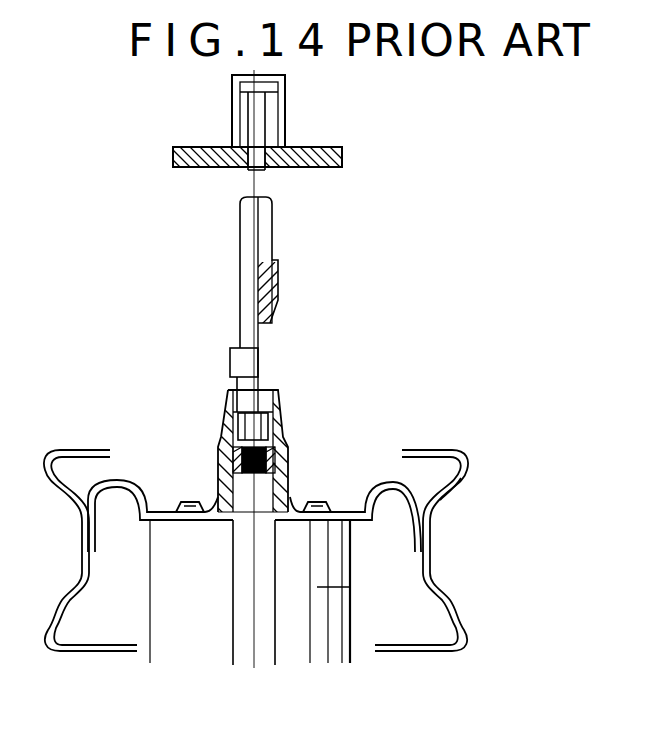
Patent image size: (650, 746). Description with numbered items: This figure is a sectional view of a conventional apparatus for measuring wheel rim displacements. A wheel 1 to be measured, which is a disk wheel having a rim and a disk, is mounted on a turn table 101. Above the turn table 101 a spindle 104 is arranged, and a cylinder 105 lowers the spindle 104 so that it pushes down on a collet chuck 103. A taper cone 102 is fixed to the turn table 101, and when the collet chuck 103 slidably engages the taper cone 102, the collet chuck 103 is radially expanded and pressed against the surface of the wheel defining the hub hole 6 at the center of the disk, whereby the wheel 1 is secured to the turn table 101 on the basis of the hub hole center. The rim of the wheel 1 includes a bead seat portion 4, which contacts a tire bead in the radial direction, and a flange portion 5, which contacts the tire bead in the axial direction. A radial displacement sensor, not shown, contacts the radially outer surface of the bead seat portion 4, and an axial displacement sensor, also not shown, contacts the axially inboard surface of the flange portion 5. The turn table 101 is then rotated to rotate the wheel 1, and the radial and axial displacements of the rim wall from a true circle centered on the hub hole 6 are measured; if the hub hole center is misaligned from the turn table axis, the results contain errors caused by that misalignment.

The cylinder 105 is at (283, 127).
The spindle 104 is at (278, 279).
The collet chuck 103 is at (283, 438).
The taper cone 102 is at (267, 487).
The wheel 1 is at (358, 512).
The hub hole 6 is at (290, 492).
The flange portion 5 is at (447, 497).
The bead seat portion 4 is at (450, 508).
The turn table 101 is at (350, 580).